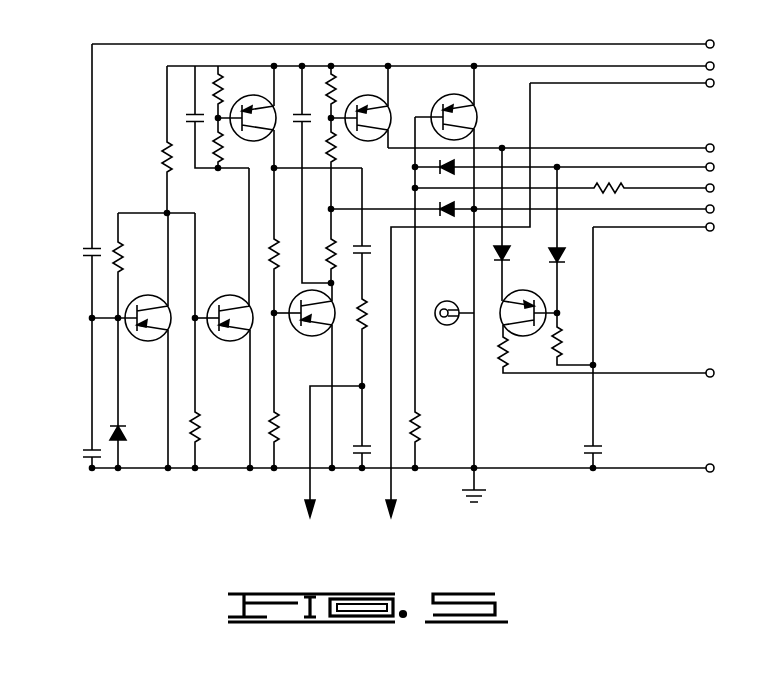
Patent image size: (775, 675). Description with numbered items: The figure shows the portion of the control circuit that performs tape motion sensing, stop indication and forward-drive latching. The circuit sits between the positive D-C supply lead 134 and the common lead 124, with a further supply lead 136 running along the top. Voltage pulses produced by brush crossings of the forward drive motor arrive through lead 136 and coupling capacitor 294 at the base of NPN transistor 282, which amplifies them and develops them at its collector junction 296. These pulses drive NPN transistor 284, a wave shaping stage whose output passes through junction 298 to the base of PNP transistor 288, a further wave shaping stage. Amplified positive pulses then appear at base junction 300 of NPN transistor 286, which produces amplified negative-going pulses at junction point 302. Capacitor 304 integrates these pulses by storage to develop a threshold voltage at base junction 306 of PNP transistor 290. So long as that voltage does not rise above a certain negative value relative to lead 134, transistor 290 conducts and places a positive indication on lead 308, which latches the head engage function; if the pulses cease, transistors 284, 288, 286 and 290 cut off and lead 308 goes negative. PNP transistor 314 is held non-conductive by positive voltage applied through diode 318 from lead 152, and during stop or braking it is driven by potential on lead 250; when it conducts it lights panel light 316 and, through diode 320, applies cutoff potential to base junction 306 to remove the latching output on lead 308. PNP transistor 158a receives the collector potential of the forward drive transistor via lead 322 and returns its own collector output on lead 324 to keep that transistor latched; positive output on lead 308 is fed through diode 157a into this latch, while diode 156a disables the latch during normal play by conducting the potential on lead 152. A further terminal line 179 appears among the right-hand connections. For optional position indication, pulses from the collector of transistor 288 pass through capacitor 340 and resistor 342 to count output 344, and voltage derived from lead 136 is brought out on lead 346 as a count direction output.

The common lead 124 is at (130, 470).
The D-C supply voltage lead 134 is at (238, 66).
The lead 136 is at (645, 44).
The lead 152 is at (715, 167).
The diode 156a is at (566, 256).
The diode 157a is at (498, 255).
The PNP latching transistor 158a is at (545, 297).
The terminal line 179 is at (713, 212).
The lead 250 is at (715, 188).
The NPN transistor 282 is at (163, 293).
The NPN transistor 284 is at (241, 293).
The NPN transistor 286 is at (323, 365).
The PNP transistor 288 is at (269, 107).
The PNP transistor 290 is at (383, 107).
The coupling capacitor 294 is at (88, 250).
The collector junction 296 is at (170, 214).
The base junction 298 is at (222, 122).
The base junction 300 is at (272, 318).
The junction point 302 is at (345, 247).
The capacitor 304 is at (303, 108).
The base junction 306 is at (338, 122).
The lead 308 is at (690, 147).
The PNP transistor 314 is at (461, 105).
The panel light 316 is at (440, 326).
The diode 318 is at (448, 162).
The diode 320 is at (456, 215).
The lead 322 is at (713, 231).
The collector lead 324 is at (648, 375).
The capacitor 340 is at (366, 246).
The resistor 342 is at (352, 332).
The output 344 is at (309, 484).
The lead 346 is at (646, 83).